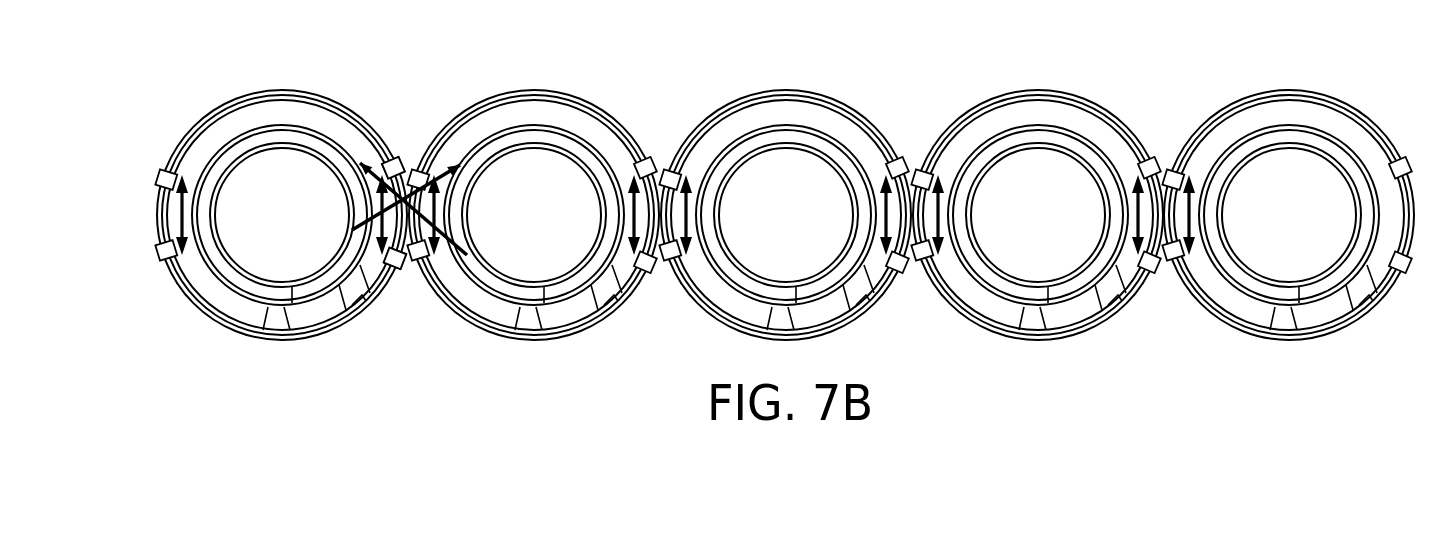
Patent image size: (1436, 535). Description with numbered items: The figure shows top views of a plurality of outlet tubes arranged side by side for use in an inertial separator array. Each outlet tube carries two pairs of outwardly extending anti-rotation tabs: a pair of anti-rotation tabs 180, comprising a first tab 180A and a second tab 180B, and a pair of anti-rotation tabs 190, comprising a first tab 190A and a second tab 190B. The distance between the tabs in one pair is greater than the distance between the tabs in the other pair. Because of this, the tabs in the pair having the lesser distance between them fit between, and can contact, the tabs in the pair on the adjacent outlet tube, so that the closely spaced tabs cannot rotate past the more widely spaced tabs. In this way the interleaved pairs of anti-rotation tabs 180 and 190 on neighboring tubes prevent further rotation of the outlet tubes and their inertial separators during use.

The anti-rotation tabs 180 is at (158, 242).
The first tab 180A is at (160, 172).
The second tab 180B is at (156, 262).
The anti-rotation tabs 190 is at (379, 230).
The first tab 190A is at (402, 157).
The second tab 190B is at (398, 272).